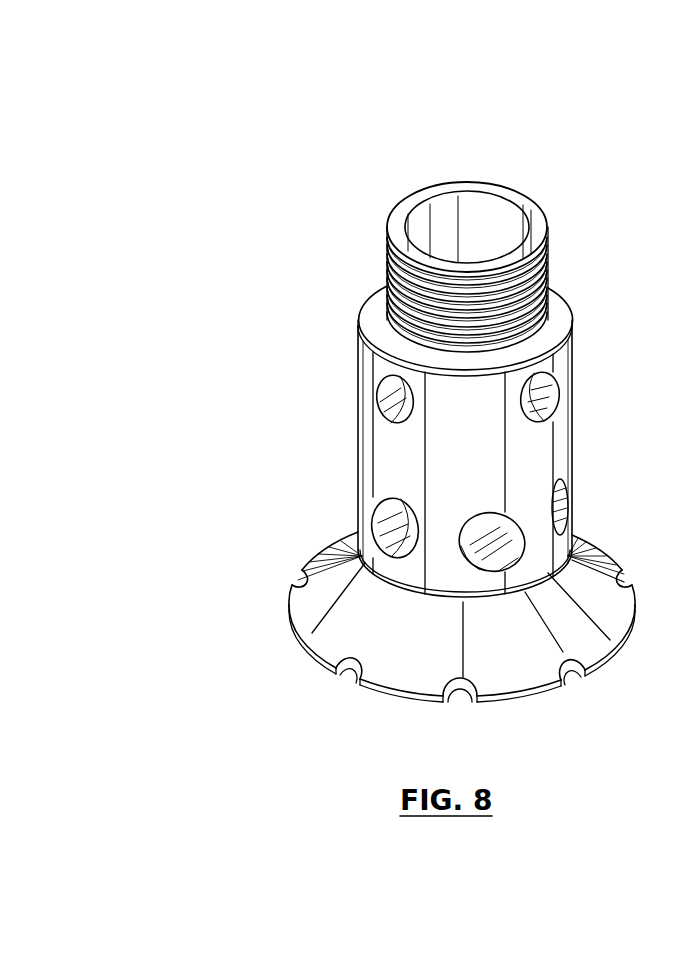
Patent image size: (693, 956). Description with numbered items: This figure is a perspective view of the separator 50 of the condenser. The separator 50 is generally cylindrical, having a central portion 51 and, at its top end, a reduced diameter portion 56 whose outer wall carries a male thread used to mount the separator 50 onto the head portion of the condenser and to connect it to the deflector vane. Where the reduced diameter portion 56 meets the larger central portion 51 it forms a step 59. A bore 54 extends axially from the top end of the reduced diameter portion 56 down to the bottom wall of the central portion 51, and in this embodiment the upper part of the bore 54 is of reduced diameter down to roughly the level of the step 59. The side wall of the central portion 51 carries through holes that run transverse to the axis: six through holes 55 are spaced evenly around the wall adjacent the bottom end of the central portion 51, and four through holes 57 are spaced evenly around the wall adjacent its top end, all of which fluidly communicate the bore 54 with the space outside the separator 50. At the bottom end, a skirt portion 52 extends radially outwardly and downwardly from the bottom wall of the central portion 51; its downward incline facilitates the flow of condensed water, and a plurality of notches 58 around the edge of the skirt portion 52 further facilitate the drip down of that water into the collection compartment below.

The separator 50 is at (314, 140).
The central portion 51 is at (560, 440).
The skirt portion 52 is at (330, 580).
The bore 54 is at (486, 207).
The through holes 55 is at (562, 510).
The reduced diameter portion 56 is at (547, 265).
The through holes 57 is at (384, 393).
The notches 58 is at (345, 672).
The step 59 is at (557, 317).